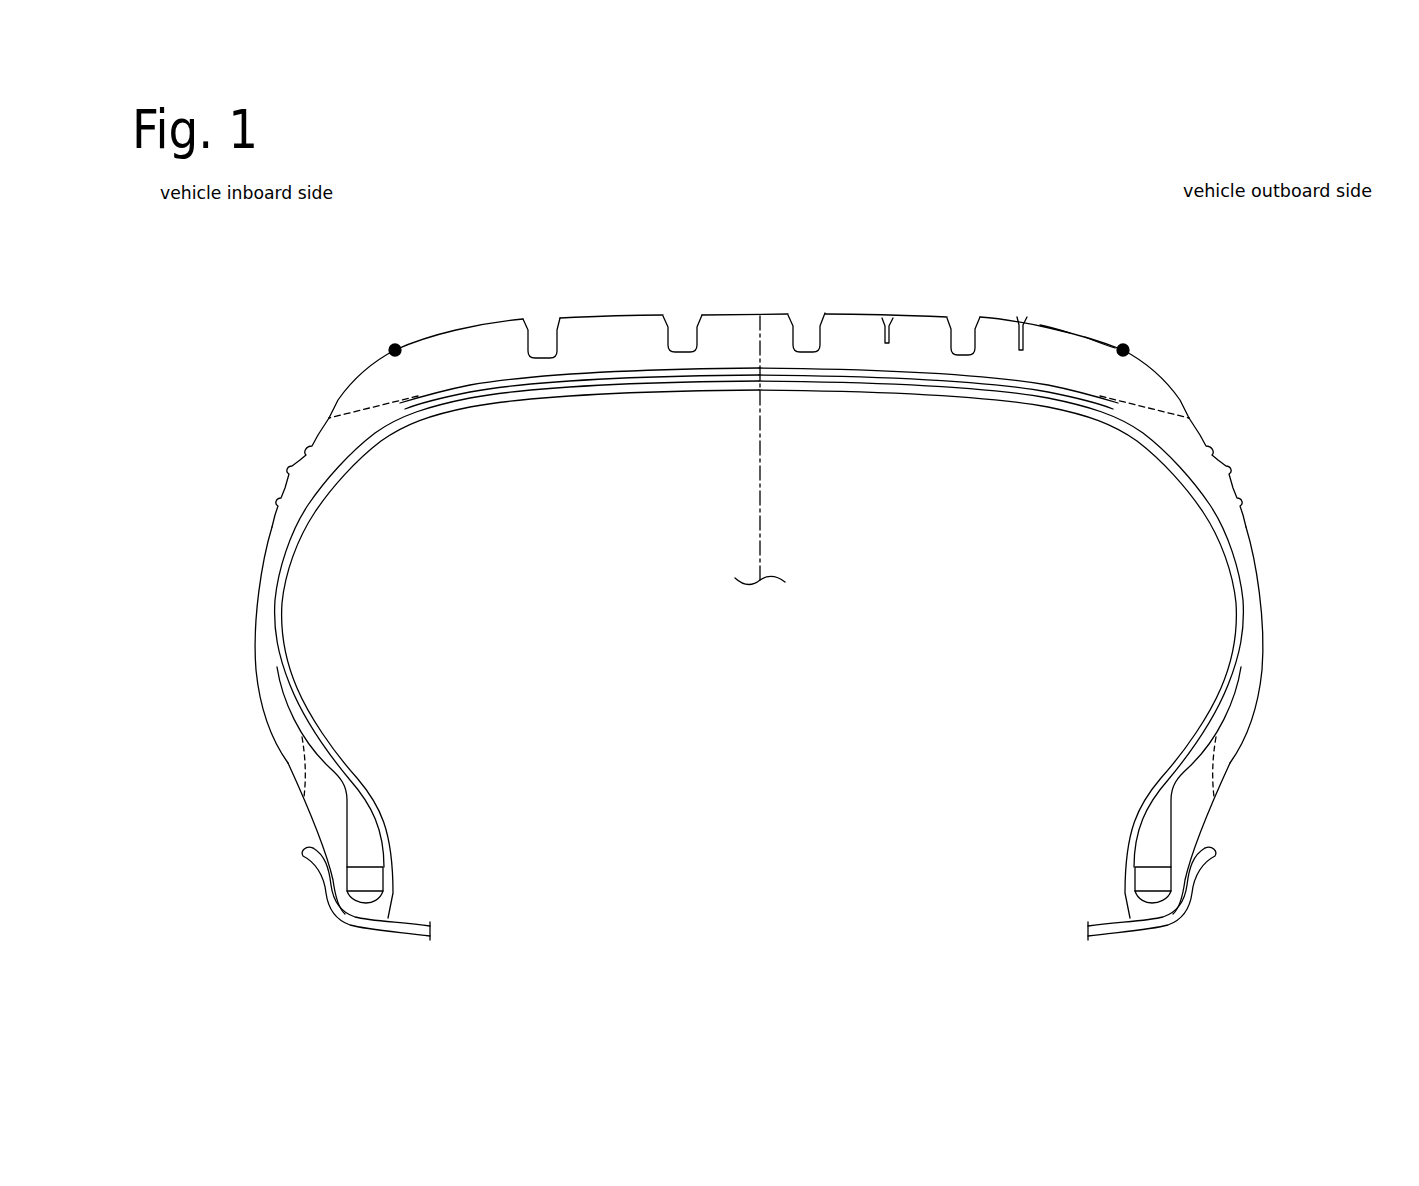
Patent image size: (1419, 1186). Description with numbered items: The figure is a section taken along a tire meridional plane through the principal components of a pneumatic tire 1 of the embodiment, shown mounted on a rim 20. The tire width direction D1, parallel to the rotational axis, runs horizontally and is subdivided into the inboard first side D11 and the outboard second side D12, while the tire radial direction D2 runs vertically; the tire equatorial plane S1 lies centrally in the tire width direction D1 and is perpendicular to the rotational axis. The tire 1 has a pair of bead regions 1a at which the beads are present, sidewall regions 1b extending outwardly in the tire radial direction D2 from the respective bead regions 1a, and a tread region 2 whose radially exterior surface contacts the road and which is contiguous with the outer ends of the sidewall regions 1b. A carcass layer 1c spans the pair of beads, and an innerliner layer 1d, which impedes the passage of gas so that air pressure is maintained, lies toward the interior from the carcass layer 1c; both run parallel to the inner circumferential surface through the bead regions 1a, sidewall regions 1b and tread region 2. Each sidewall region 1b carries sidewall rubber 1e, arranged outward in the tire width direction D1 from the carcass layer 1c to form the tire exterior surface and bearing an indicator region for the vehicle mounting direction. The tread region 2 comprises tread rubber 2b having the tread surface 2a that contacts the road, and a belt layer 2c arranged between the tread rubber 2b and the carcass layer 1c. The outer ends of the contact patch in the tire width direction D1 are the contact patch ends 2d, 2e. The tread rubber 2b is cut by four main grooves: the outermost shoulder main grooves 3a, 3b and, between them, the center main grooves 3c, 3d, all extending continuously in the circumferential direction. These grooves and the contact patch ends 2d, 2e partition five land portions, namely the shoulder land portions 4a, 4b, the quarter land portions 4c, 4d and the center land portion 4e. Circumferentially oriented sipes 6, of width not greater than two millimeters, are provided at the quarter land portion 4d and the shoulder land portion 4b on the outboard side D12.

The pneumatic tire 1 is at (1212, 305).
The bead region 1a is at (297, 827).
The sidewall region 1b is at (262, 505).
The carcass layer 1c is at (520, 392).
The innerliner layer 1d is at (903, 394).
The sidewall rubber 1e is at (265, 585).
The tread region 2 is at (759, 271).
The tread surface 2a is at (1055, 322).
The tread rubber 2b is at (1100, 330).
The belt layer 2c is at (637, 376).
The contact patch end 2d is at (382, 344).
The contact patch end 2e is at (1136, 344).
The shoulder main groove 3a is at (545, 318).
The shoulder main groove 3b is at (963, 316).
The center main groove 3c is at (683, 316).
The center main groove 3d is at (805, 314).
The shoulder land portion 4a is at (483, 318).
The shoulder land portion 4b is at (1010, 317).
The quarter land portion 4c is at (622, 316).
The quarter land portion 4d is at (875, 314).
The center land portion 4e is at (748, 314).
The circumferentially oriented sipe 6 is at (888, 316).
The rim 20 is at (368, 931).
The tire equatorial plane S1 is at (783, 523).
The tire width direction D1 is at (815, 840).
The tire radial direction D2 is at (760, 917).
The first width direction side D11 is at (315, 213).
The second width direction side D12 is at (1203, 215).